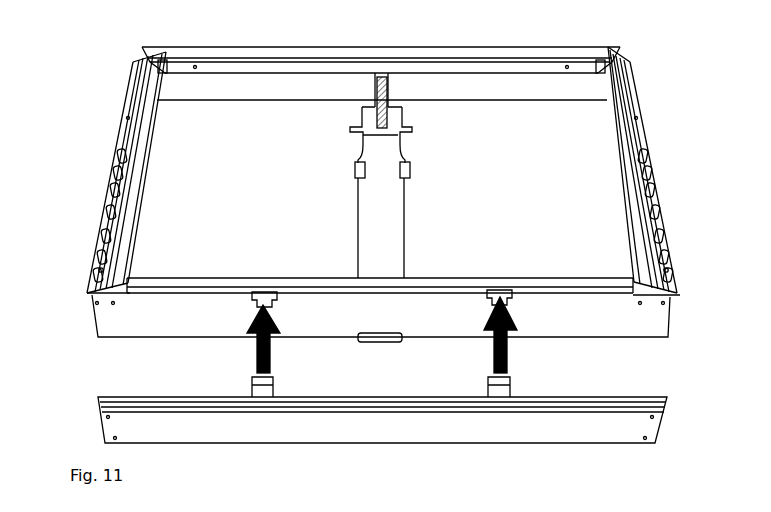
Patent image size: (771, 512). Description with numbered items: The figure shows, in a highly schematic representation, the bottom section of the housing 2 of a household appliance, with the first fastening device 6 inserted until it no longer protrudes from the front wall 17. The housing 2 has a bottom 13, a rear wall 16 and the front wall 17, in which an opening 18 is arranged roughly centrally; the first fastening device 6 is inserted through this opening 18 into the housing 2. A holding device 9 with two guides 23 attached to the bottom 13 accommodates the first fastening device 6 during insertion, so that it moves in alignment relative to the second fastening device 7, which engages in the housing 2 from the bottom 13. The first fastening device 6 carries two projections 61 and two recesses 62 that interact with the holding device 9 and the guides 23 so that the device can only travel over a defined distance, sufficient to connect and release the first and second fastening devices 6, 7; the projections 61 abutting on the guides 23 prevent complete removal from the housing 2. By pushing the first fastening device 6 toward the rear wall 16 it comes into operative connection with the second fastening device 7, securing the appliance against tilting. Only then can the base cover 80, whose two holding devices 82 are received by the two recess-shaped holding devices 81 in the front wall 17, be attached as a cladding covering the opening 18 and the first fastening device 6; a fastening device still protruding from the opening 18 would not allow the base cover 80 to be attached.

The housing 2 is at (351, 320).
The first fastening device 6 is at (311, 363).
The second fastening device 7 is at (388, 90).
The holding device 9 is at (356, 174).
The bottom 13 is at (556, 179).
The rear wall 16 is at (558, 93).
The front wall 17 is at (383, 316).
The opening 18 is at (445, 363).
The guides 23 is at (354, 168).
The projections 61 is at (412, 130).
The recesses 62 is at (398, 134).
The base cover 80 is at (383, 431).
The holding devices 81 is at (260, 298).
The holding devices 82 is at (383, 396).